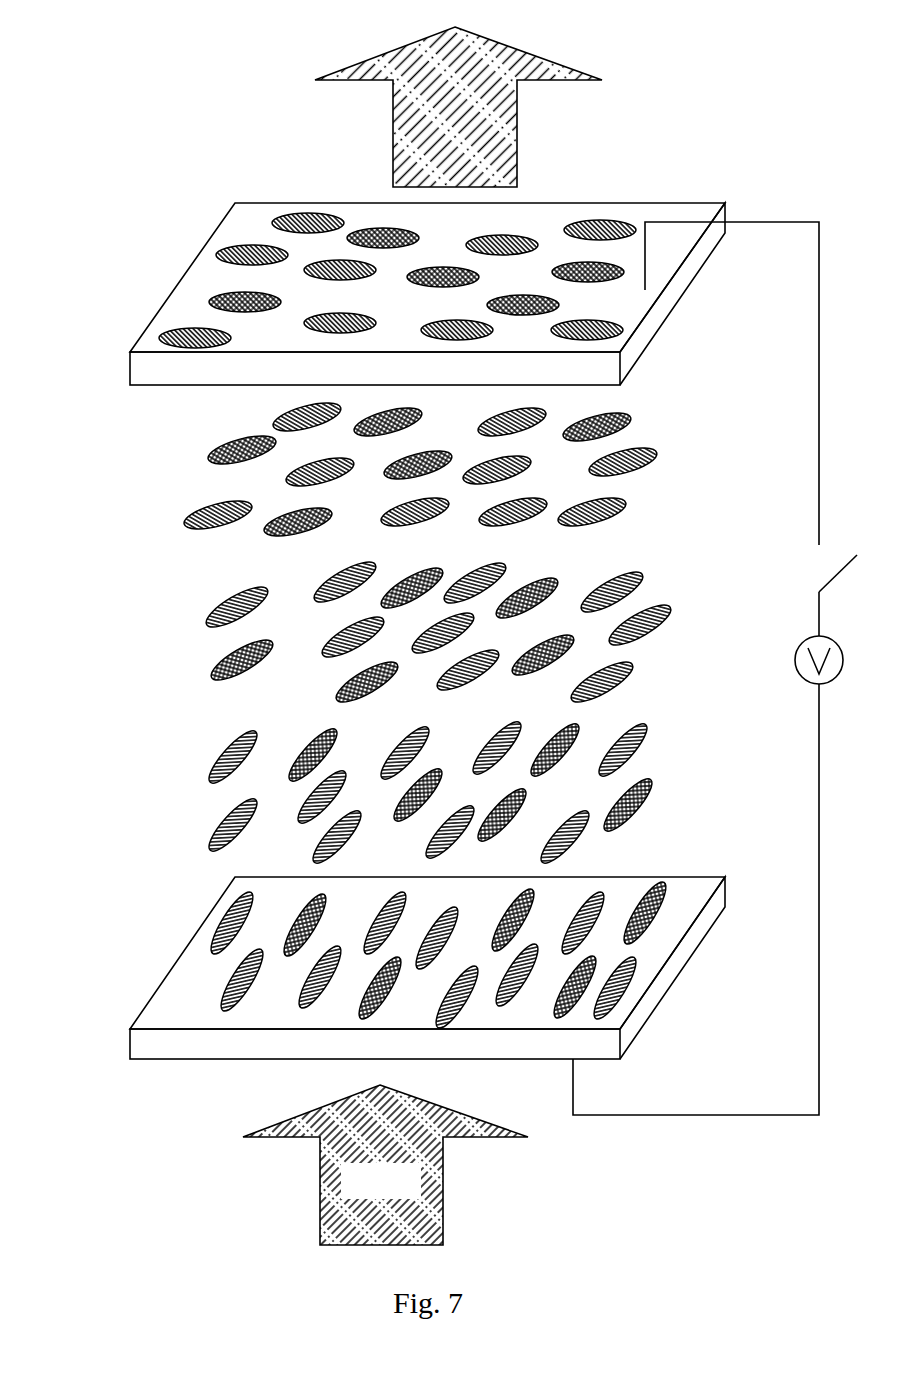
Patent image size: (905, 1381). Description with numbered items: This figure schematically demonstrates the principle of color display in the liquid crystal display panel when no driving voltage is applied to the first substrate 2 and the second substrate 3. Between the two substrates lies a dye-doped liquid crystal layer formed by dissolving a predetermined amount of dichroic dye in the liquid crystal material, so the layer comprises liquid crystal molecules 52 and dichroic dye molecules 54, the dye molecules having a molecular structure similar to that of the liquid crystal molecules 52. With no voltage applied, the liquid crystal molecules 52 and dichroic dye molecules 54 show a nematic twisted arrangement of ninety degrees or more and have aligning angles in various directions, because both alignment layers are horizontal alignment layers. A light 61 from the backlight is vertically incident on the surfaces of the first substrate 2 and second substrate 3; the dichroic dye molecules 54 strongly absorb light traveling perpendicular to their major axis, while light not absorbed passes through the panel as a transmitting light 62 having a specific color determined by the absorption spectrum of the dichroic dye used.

The first substrate 2 is at (187, 312).
The second substrate 3 is at (185, 1012).
The liquid crystal molecules 52 is at (185, 522).
The dichroic dye molecules 54 is at (212, 670).
The light 61 is at (340, 1220).
The transmitting light 62 is at (425, 162).